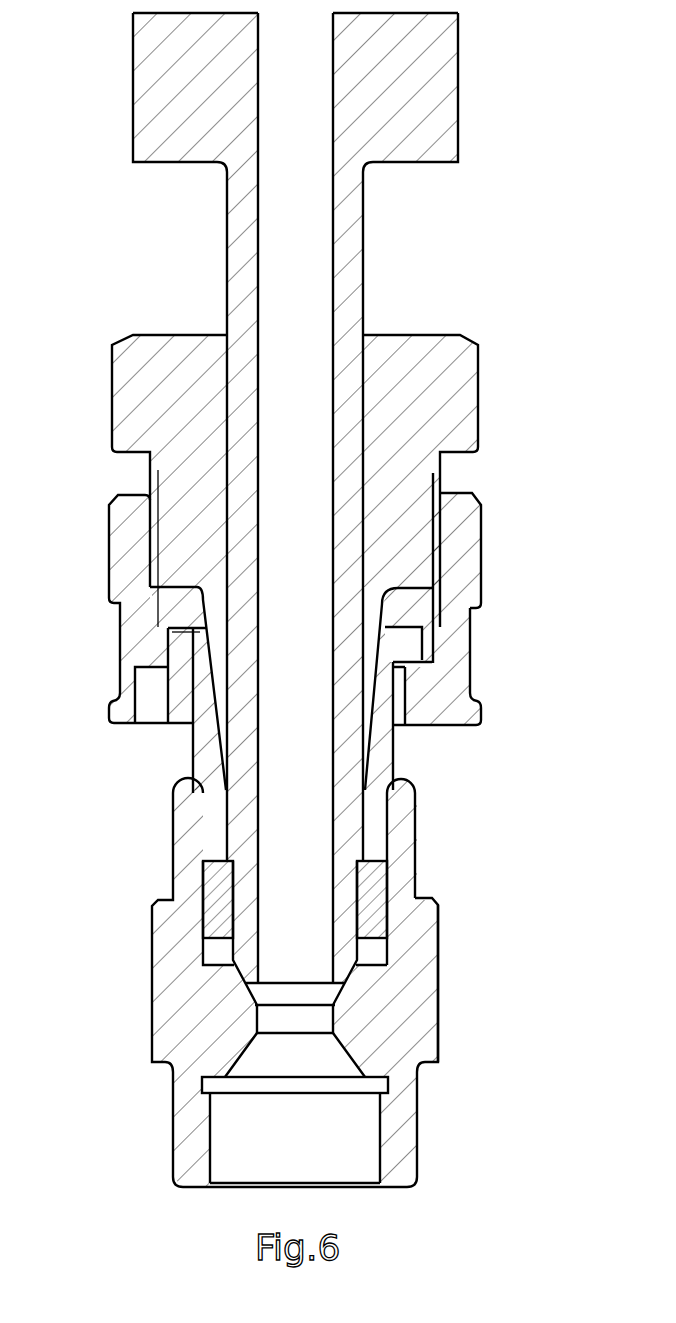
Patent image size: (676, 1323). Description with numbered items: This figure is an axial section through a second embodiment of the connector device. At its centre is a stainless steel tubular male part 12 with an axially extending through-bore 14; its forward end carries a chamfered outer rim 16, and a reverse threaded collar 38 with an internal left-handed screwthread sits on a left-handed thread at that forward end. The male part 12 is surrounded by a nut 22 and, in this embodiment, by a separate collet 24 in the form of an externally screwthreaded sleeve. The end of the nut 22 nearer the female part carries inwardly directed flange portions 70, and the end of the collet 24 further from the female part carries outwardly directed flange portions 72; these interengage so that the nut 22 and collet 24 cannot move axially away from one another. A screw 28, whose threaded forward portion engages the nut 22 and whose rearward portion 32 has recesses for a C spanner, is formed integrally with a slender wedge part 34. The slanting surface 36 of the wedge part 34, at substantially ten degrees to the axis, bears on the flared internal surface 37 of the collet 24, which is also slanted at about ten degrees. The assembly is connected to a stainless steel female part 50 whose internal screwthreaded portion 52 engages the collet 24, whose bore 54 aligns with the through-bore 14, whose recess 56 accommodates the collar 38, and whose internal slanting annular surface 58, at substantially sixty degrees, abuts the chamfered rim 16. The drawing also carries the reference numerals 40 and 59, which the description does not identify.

The male part 12 is at (352, 248).
The through-bore 14 is at (313, 415).
The chamfered outer rim 16 is at (153, 1063).
The nut 22 is at (468, 530).
The collet 24 is at (203, 743).
The screw 28 is at (142, 380).
The rearward portion 32 is at (467, 372).
The wedge part 34 is at (478, 662).
The slanting surface 36 is at (445, 724).
The flared internal surface 37 is at (182, 630).
The reverse threaded collar 38 is at (200, 862).
The ferrule nose 40 is at (380, 757).
The female part 50 is at (402, 992).
The internal screwthreaded portion 52 is at (407, 809).
The bore 54 is at (303, 1020).
The recess 56 is at (380, 945).
The internal slanting annular surface 58 is at (340, 997).
The gap 59 is at (200, 955).
The inwardly directed flange portions 70 is at (423, 702).
The outwardly directed flange portions 72 is at (405, 640).